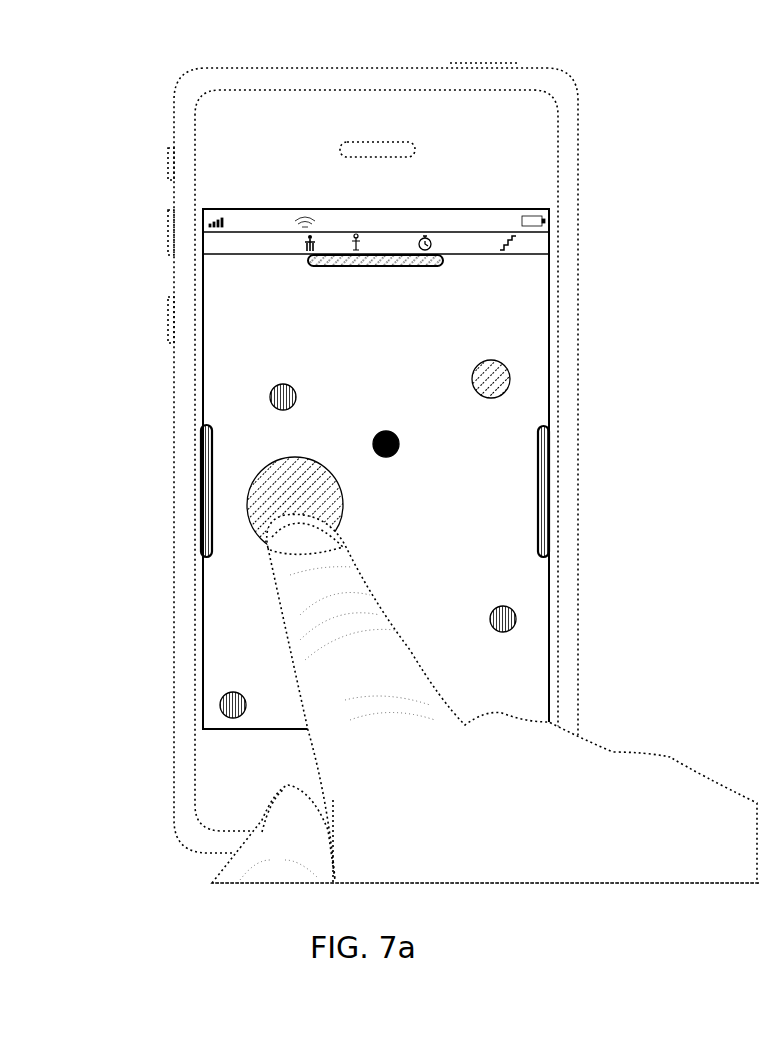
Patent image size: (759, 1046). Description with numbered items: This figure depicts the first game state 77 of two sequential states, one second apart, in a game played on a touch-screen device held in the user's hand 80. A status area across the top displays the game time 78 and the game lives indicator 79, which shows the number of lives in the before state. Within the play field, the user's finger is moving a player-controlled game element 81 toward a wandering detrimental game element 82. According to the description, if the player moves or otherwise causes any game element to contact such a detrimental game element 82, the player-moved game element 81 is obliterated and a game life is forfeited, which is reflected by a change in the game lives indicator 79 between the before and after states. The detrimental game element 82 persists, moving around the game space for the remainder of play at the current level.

The game state 77 is at (234, 634).
The game time 78 is at (450, 235).
The game lives indicator 79 is at (307, 236).
The user hand 80 is at (323, 578).
The game element 81 is at (293, 494).
The detrimental game element 82 is at (399, 444).